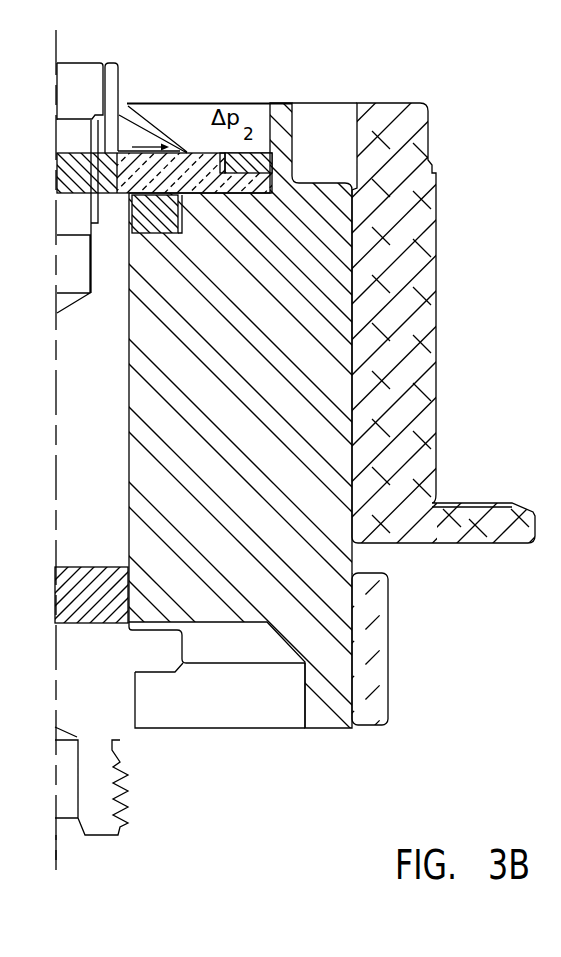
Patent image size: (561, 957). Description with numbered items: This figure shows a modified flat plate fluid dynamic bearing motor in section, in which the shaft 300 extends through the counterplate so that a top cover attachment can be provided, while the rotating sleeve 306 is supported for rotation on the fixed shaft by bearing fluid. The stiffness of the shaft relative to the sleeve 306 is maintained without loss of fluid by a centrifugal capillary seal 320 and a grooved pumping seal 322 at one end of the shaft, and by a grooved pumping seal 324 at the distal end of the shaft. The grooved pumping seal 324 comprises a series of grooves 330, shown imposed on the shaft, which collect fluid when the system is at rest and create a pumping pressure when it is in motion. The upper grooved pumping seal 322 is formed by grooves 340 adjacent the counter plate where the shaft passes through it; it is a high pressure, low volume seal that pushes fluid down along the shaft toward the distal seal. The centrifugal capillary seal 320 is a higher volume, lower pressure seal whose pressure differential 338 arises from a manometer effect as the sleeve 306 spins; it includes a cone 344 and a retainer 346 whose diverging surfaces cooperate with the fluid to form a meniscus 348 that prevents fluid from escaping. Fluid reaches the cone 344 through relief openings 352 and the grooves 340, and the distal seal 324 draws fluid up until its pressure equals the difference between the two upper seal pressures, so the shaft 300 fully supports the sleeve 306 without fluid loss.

The shaft 300 is at (117, 437).
The sleeve 306 is at (277, 400).
The centrifugal capillary seal 320 is at (138, 91).
The grooved pumping seal 322 is at (73, 132).
The grooved pumping seal 324 is at (97, 624).
The grooves 330 is at (122, 602).
The pressure differential Δp2 338 is at (253, 112).
The grooves 340 is at (121, 195).
The cone 344 is at (128, 132).
The retainer 346 is at (200, 118).
The meniscus 348 is at (158, 118).
The relief openings 352 is at (121, 195).